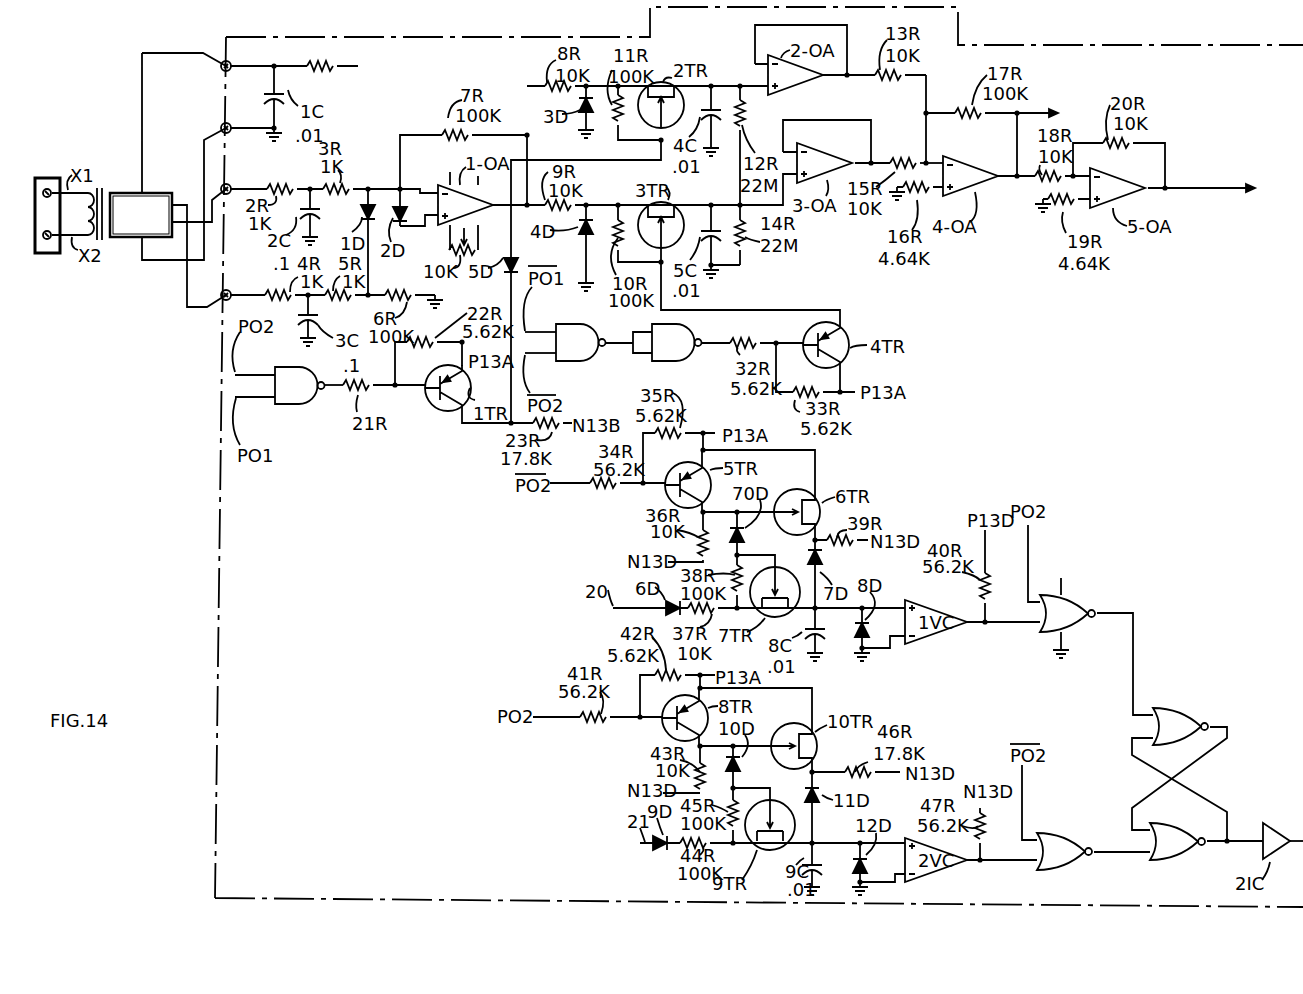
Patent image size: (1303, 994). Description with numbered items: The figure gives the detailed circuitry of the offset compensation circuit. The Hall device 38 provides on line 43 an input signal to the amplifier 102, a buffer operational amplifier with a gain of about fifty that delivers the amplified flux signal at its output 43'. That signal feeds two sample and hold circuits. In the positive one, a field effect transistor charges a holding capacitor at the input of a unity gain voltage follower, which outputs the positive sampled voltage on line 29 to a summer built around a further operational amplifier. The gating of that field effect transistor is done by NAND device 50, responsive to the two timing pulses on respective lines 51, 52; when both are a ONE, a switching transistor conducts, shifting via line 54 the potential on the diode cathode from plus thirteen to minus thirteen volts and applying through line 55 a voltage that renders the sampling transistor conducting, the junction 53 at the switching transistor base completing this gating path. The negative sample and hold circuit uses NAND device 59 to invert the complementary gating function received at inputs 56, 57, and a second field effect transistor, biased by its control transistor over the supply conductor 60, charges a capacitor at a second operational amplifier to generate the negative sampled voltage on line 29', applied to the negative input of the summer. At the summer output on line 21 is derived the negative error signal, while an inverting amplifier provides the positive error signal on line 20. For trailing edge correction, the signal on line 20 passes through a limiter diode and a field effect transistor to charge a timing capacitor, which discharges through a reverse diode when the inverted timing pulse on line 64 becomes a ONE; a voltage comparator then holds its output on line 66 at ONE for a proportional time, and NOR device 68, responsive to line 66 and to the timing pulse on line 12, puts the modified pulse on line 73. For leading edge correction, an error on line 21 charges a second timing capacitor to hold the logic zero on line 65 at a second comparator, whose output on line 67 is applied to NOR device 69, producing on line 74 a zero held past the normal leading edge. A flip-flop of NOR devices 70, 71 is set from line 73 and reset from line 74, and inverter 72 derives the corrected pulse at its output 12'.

The Hall device 38 is at (126, 192).
The line 43 is at (249, 172).
The amplifier 102 is at (388, 169).
The output line 43' is at (506, 224).
The line 55 is at (578, 158).
The line 54 is at (510, 290).
The line 29 is at (949, 116).
The line 29' is at (914, 144).
The line 21 is at (1040, 113).
The line 20 is at (1225, 187).
The transistor line 60 is at (785, 310).
The line 52 is at (266, 372).
The line 51 is at (265, 398).
The NAND device 50 is at (308, 405).
The junction 53 is at (400, 393).
The NAND gate input 56 is at (540, 332).
The NAND gate input 57 is at (540, 355).
The NAND device 59 is at (690, 362).
The line 64 is at (583, 487).
The line 65 is at (573, 720).
The line 66 is at (975, 630).
The line 67 is at (975, 864).
The NOR device 68 is at (1080, 597).
The NOR device 69 is at (1065, 870).
The NOR device 70 is at (1183, 708).
The NOR device 71 is at (1185, 862).
The inverter 72 is at (1265, 826).
The line 73 is at (1135, 640).
The line 74 is at (1130, 856).
The line 12 is at (1019, 563).
The output signal line 12' is at (1290, 867).